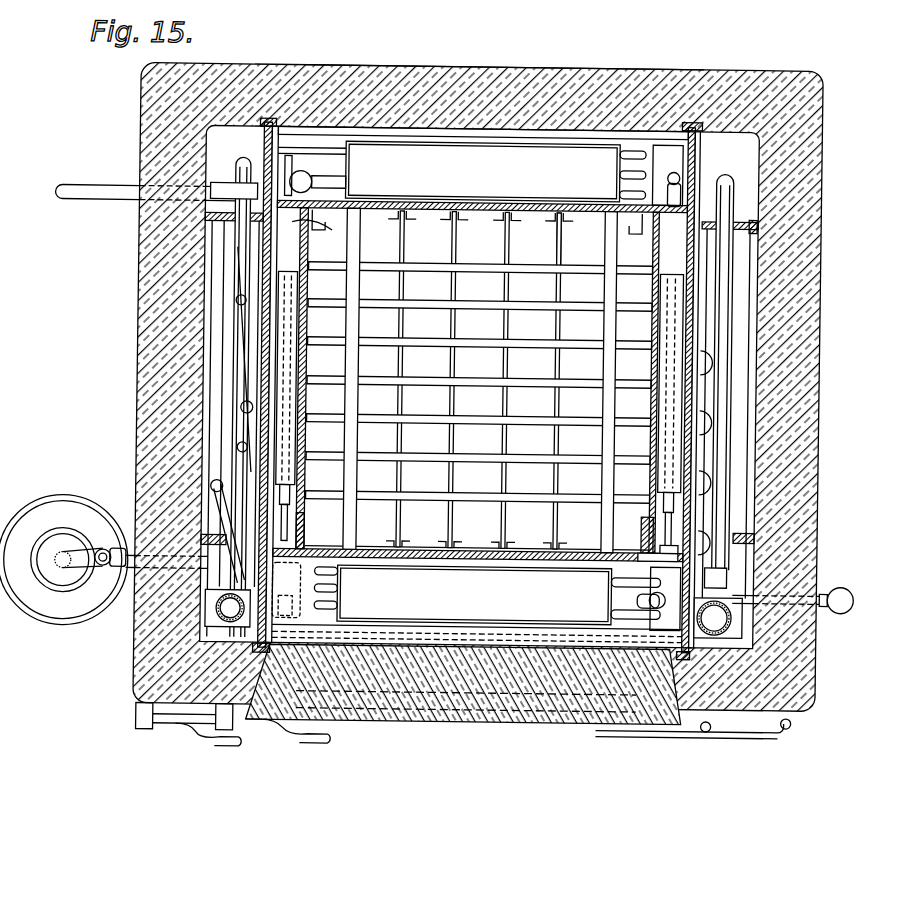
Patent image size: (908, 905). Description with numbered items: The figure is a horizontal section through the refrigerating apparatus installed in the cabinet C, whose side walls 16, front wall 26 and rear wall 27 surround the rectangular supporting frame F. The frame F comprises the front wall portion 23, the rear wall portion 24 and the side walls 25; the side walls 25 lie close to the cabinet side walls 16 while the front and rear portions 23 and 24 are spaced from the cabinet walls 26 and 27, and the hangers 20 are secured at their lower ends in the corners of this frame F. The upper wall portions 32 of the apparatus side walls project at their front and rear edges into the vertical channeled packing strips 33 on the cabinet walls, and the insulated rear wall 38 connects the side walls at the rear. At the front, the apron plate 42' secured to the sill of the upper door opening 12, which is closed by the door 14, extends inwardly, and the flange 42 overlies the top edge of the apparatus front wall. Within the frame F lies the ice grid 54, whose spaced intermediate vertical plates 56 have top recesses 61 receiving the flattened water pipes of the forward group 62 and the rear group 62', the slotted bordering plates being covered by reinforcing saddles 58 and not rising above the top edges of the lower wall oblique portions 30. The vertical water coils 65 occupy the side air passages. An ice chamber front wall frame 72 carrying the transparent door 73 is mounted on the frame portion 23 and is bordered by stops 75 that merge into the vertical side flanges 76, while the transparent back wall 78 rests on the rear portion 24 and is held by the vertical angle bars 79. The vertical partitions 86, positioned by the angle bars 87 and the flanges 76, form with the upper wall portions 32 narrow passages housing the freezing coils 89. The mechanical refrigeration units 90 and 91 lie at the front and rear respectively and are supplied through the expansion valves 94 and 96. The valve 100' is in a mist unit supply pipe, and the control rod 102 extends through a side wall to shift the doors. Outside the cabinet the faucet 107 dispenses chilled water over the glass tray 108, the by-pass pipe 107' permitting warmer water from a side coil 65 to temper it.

The upper door opening 12 is at (707, 723).
The door 14 is at (557, 728).
The side walls 16 is at (185, 152).
The hangers 20 is at (755, 228).
The front wall portion 23 is at (170, 578).
The rear wall portion 24 is at (207, 207).
The side walls 25 is at (203, 407).
The front wall 26 is at (740, 703).
The rear wall 27 is at (527, 78).
The lower wall oblique portions 30 is at (296, 587).
The upper wall portions 32 is at (270, 142).
The vertical channeled packing strips 33 is at (267, 118).
The rear wall 38 is at (588, 134).
The flange 42 is at (476, 694).
The guard or apron plate 42' is at (465, 730).
The ice grid 54 is at (420, 549).
The intermediate vertical plates 56 is at (480, 337).
The reinforcing saddle 58 is at (357, 283).
The recesses 61 is at (483, 245).
The forward group of water pipes 62 is at (478, 380).
The rear group of water pipes 62' is at (576, 240).
The vertical water coil 65 is at (232, 325).
The ice chamber front wall frame 72 is at (680, 549).
The door 73 is at (487, 559).
The stops 75 is at (655, 553).
The vertical side flanges 76 is at (306, 528).
The ice chamber back wall 78 is at (372, 203).
The vertical angle bars 79 is at (295, 150).
The vertical partitions 86 is at (654, 247).
The vertical angle bars 87 is at (320, 235).
The freezing or heat absorption coil 89 is at (292, 408).
The front refrigeration unit 90 is at (500, 622).
The rear refrigeration unit 91 is at (437, 157).
The expansion valve 94 is at (740, 625).
The expansion valve 96 is at (220, 614).
The valve 100' is at (167, 358).
The control rod 102 is at (743, 573).
The faucet 107 is at (64, 596).
The shunt or by-pass pipe 107' is at (163, 496).
The glass tray 108 is at (44, 497).
The cabinet C is at (828, 100).
The rectangular frame F is at (205, 368).